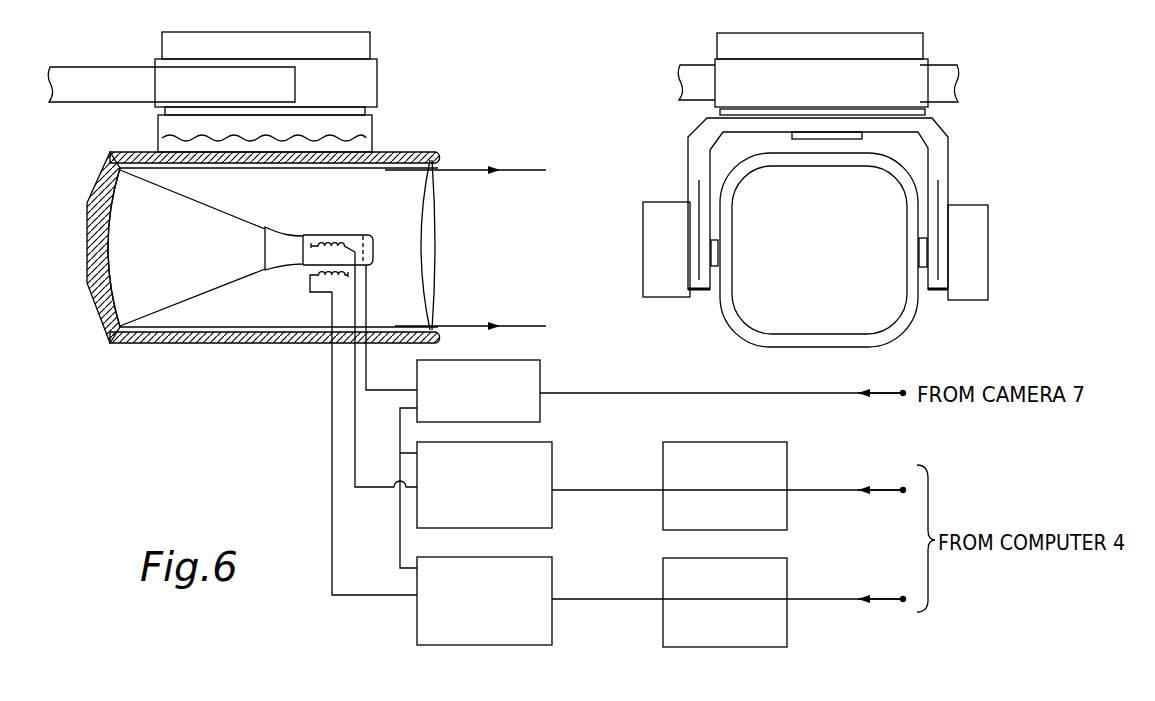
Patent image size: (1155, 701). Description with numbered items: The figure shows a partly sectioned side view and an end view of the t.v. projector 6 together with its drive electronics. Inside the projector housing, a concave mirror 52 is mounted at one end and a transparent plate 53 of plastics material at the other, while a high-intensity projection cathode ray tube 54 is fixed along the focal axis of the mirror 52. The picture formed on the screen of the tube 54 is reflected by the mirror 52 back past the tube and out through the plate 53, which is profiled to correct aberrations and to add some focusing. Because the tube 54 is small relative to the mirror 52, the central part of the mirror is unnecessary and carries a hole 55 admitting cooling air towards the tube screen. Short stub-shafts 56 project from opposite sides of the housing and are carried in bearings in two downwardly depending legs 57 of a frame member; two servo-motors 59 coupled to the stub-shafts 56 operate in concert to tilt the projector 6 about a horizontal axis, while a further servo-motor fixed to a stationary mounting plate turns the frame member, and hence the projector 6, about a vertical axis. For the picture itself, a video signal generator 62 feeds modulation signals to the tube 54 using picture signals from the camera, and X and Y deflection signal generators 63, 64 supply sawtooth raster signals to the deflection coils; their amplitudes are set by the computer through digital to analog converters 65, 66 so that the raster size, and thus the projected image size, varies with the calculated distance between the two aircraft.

The t.v. projector 6 is at (183, 360).
The concave mirror 52 is at (97, 293).
The transparent plate 53 is at (437, 275).
The high-intensity projection cathode ray tube 54 is at (310, 232).
The hole 55 is at (87, 243).
The stub-shafts 56 is at (713, 292).
The legs 57 is at (700, 195).
The servo-motors 59 is at (643, 255).
The video signal generator 62 is at (540, 386).
The X deflection signal generator 63 is at (550, 481).
The Y deflection signal generator 64 is at (551, 591).
The digital to analog converter 65 is at (780, 463).
The digital to analog converter 66 is at (778, 637).